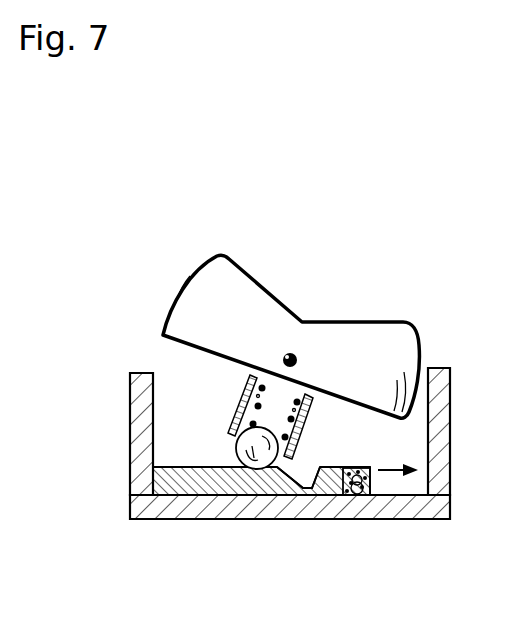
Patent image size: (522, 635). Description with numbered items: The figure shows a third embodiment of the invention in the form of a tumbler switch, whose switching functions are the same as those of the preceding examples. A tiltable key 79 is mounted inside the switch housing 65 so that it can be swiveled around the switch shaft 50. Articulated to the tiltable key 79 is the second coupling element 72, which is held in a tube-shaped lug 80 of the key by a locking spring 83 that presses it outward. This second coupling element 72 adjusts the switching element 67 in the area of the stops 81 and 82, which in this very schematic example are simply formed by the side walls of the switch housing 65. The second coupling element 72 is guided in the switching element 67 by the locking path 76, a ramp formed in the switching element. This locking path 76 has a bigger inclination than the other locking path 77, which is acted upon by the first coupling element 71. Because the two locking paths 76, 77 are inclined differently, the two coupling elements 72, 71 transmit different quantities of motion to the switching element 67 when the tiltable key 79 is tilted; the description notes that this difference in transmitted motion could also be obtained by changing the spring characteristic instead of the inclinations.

The switch shaft 50 is at (293, 351).
The switch housing 65 is at (142, 497).
The switching element 67 is at (180, 497).
The first coupling element 71 is at (346, 498).
The second coupling element 72 is at (262, 470).
The locking path 76 is at (316, 466).
The locking path 77 is at (357, 500).
The tiltable key 79 is at (209, 278).
The tube-shaped lug 80 is at (233, 368).
The stop 81 is at (153, 445).
The stop 82 is at (440, 444).
The locking spring 83 is at (241, 401).